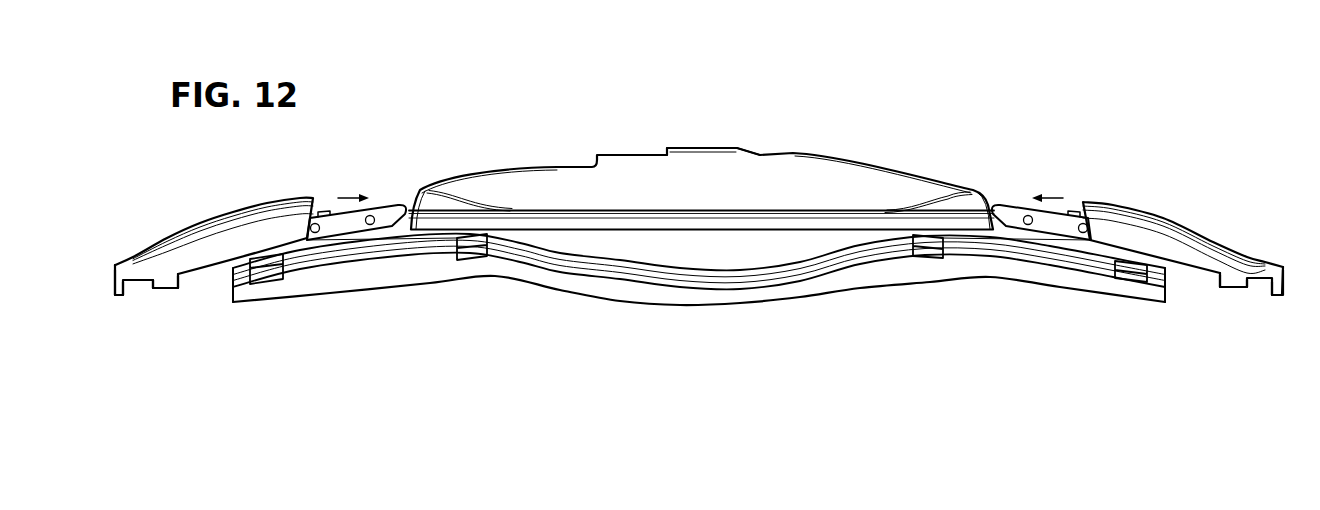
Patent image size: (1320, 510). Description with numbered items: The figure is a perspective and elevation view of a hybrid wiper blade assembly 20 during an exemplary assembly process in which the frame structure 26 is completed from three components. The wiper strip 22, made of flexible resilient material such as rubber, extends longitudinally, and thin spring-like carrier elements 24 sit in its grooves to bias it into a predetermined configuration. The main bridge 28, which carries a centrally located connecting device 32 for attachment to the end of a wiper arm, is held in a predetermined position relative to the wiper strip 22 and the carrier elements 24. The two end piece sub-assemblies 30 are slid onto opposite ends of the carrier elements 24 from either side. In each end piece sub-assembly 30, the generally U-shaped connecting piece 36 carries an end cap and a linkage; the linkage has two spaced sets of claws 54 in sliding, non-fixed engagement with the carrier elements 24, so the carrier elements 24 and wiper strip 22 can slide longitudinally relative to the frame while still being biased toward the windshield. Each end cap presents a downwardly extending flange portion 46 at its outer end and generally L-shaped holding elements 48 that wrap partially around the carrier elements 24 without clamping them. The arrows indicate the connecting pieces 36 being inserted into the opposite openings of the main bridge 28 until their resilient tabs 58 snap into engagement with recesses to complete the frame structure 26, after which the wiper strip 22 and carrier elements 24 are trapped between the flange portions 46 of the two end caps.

The wiper blade assembly 20 is at (944, 81).
The wiper strip 22 is at (815, 290).
The carrier elements 24 is at (582, 265).
The frame structure 26 is at (556, 163).
The main bridge 28 is at (843, 186).
The end piece sub-assemblies 30 is at (238, 213).
The connecting device 32 is at (678, 147).
The connecting piece 36 is at (384, 209).
The flange portion 46 is at (112, 295).
The holding elements 48 is at (167, 289).
The claws 54 is at (268, 271).
The resilient tabs 58 is at (323, 210).